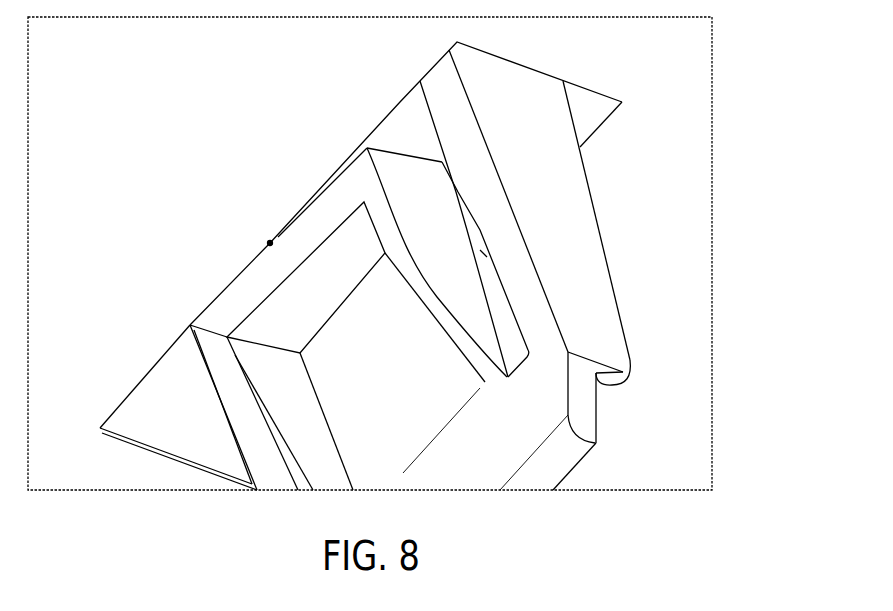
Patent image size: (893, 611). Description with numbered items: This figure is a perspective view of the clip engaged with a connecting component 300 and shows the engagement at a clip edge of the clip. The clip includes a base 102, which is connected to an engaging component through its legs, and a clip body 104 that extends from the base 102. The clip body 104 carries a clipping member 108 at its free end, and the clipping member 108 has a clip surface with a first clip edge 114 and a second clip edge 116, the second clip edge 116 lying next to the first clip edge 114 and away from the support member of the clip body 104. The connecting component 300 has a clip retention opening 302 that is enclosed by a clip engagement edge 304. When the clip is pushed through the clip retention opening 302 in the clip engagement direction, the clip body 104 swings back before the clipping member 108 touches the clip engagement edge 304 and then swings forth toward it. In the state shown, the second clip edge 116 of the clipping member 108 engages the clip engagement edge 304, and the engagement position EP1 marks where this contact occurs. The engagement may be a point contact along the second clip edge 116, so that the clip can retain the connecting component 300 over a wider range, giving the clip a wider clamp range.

The connecting component 300 is at (714, 256).
The base 102 is at (600, 213).
The clip body 104 is at (459, 191).
The clipping member 108 is at (278, 295).
The first clip edge 114 is at (406, 144).
The second clip edge 116 is at (348, 162).
The clip retention opening 302 is at (583, 100).
The clip engagement edge 304 is at (145, 380).
The engagement position EP1 is at (268, 243).